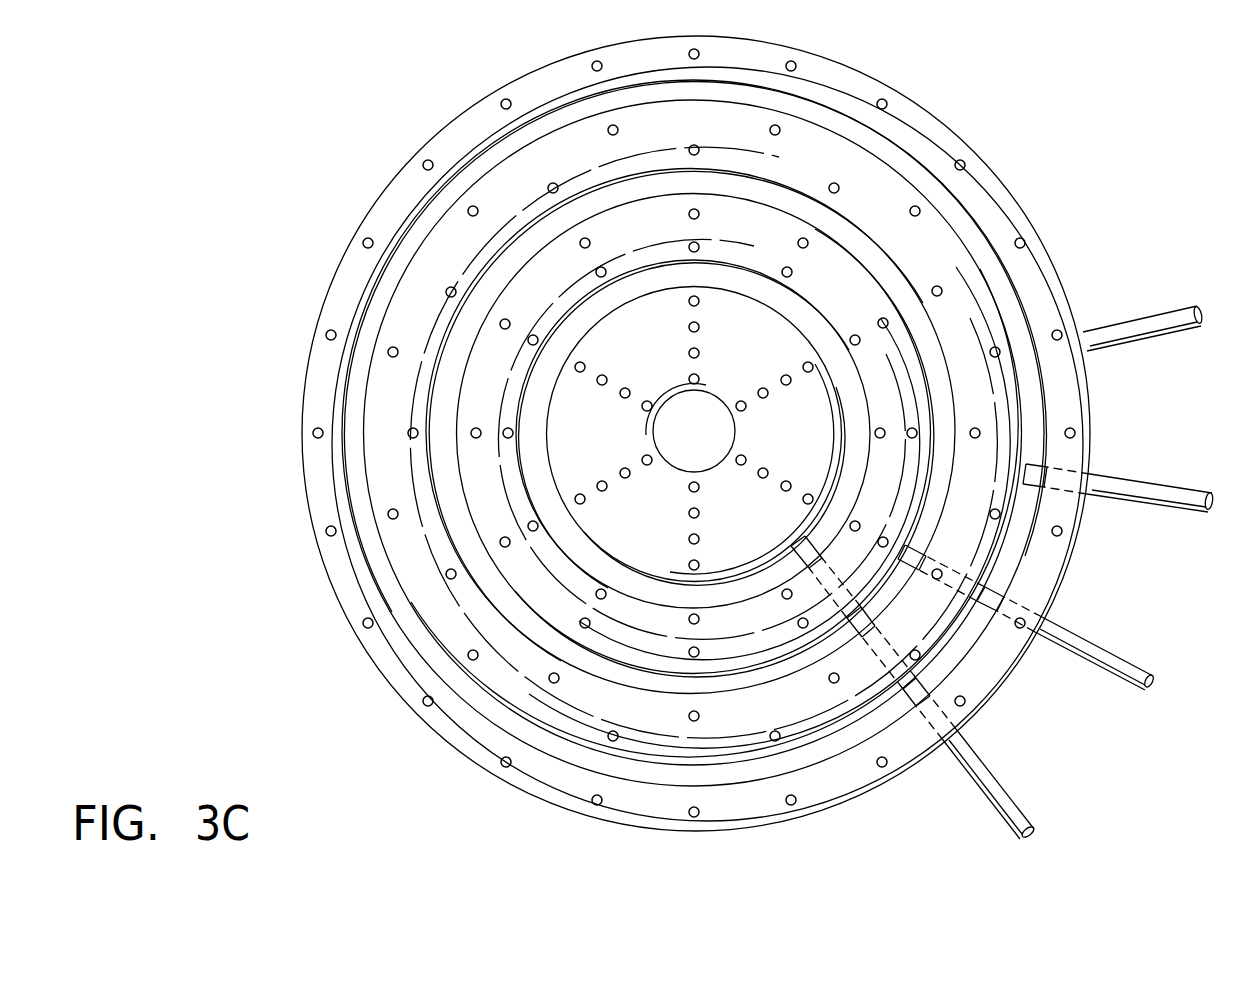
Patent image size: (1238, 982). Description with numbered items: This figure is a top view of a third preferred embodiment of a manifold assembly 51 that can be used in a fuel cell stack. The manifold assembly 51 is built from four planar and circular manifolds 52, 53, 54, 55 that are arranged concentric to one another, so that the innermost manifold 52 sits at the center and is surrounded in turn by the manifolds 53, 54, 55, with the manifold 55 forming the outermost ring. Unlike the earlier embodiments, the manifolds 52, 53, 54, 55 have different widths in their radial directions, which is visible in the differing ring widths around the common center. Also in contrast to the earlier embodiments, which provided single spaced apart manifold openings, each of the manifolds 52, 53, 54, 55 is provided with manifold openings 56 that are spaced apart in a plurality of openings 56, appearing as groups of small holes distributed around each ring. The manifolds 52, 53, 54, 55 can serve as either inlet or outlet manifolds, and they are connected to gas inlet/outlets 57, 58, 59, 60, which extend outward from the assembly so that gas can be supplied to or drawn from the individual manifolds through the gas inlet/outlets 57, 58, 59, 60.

The manifold assembly 51 is at (418, 770).
The manifold 52 is at (652, 529).
The manifold 53 is at (562, 584).
The manifold 54 is at (478, 621).
The manifold 55 is at (390, 651).
The manifold openings 56 is at (689, 326).
The gas inlet/outlet 57 is at (974, 756).
The gas inlet/outlet 58 is at (1063, 627).
The gas inlet/outlet 59 is at (1123, 483).
The gas inlet/outlet 60 is at (1103, 332).